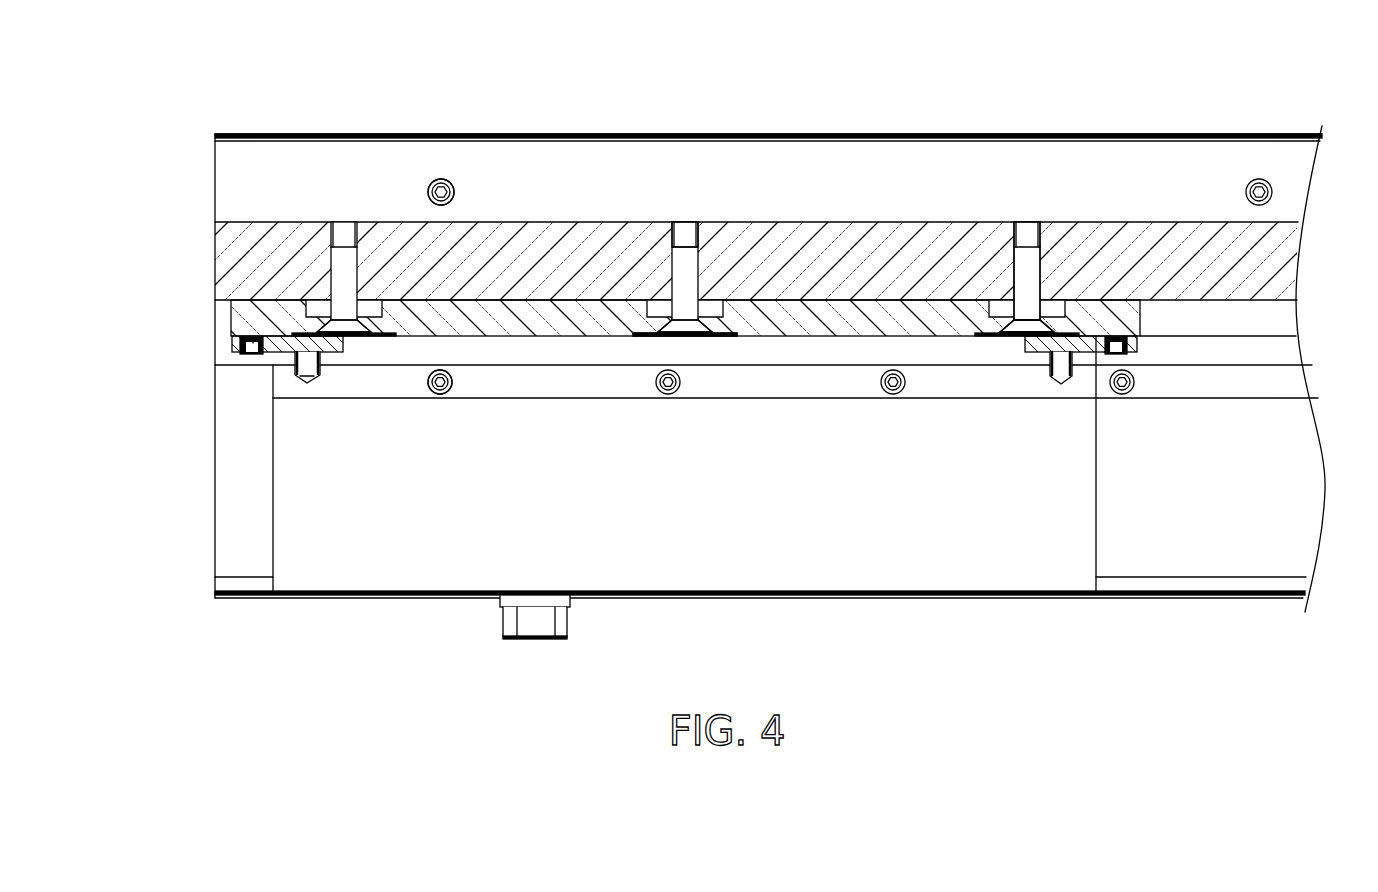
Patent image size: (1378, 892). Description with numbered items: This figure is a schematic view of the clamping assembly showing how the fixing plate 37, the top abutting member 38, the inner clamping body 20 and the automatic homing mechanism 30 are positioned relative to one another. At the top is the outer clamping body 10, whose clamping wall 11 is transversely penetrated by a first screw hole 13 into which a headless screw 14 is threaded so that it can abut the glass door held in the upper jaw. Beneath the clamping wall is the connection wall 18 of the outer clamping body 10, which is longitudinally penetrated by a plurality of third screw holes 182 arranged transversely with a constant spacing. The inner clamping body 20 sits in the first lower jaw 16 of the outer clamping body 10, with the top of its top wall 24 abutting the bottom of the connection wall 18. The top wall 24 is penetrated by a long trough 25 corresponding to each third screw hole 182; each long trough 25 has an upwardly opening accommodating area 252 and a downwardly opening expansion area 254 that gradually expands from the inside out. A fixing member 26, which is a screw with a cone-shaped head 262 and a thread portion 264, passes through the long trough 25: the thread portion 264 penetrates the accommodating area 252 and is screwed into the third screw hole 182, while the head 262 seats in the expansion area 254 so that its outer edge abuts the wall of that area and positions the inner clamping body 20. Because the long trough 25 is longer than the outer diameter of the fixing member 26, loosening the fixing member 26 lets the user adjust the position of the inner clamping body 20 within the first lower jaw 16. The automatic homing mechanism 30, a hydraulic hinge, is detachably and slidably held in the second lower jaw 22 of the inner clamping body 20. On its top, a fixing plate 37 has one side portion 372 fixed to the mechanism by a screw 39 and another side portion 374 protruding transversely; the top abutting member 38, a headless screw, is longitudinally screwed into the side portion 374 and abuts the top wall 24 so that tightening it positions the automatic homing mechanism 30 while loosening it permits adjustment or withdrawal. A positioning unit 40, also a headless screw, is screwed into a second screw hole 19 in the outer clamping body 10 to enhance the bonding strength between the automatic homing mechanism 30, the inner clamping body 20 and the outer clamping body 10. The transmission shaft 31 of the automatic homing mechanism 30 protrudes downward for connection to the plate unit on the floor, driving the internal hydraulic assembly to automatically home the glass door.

The outer clamping body 10 is at (252, 126).
The clamping wall 11 is at (240, 176).
The first screw hole 13 is at (447, 183).
The headless screw 14 is at (437, 180).
The first lower jaw 16 is at (1253, 336).
The connection wall 18 is at (245, 235).
The third screw hole 182 is at (685, 228).
The second screw hole 19 is at (445, 394).
The inner clamping body 20 is at (224, 318).
The second lower jaw 22 is at (253, 424).
The top wall 24 is at (240, 308).
The long trough 25 is at (514, 180).
The accommodating area 252 is at (658, 308).
The expansion area 254 is at (645, 328).
The fixing member 26 is at (883, 180).
The head 262 is at (688, 267).
The thread portion 264 is at (697, 325).
The automatic homing mechanism 30 is at (266, 493).
The transmission shaft 31 is at (534, 628).
The fixing plate 37 is at (615, 365).
The side portion 372 is at (285, 352).
The side portion 374 is at (232, 344).
The top abutting member 38 is at (253, 343).
The screw 39 is at (307, 372).
The positioning unit 40 is at (437, 393).